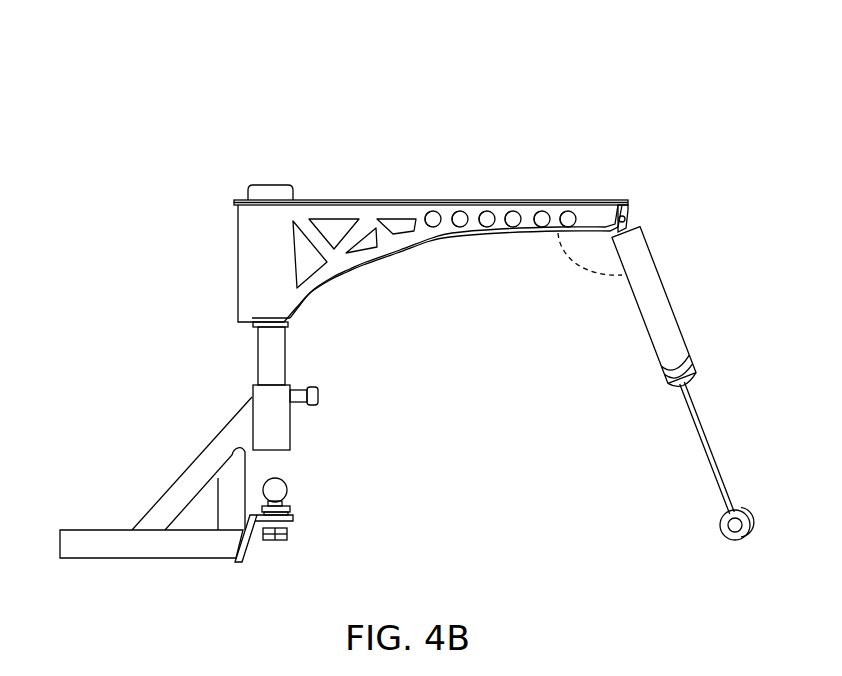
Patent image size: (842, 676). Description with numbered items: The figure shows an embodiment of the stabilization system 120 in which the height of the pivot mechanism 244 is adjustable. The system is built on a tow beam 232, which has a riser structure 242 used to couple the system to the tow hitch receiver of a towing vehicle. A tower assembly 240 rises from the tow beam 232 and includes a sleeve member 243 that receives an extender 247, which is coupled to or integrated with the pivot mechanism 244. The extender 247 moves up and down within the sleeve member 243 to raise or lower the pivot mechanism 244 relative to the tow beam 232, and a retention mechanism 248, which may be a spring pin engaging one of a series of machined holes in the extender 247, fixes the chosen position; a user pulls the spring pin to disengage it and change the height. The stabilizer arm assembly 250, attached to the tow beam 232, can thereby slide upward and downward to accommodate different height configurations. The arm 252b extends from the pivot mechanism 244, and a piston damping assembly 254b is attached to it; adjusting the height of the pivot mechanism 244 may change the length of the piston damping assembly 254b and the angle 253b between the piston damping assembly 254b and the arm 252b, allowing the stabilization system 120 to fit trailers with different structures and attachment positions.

The stabilization system 120 is at (148, 100).
The tow beam 232 is at (90, 530).
The tower assembly 240 is at (131, 332).
The riser structure 242 is at (171, 460).
The sleeve member 243 is at (290, 442).
The pivot mechanism 244 is at (263, 185).
The extender 247 is at (285, 358).
The retention mechanism 248 is at (336, 408).
The stabilizer arm assembly 250 is at (698, 172).
The arm 252b is at (429, 251).
The angle 253b is at (576, 282).
The piston damping assembly 254b is at (670, 306).